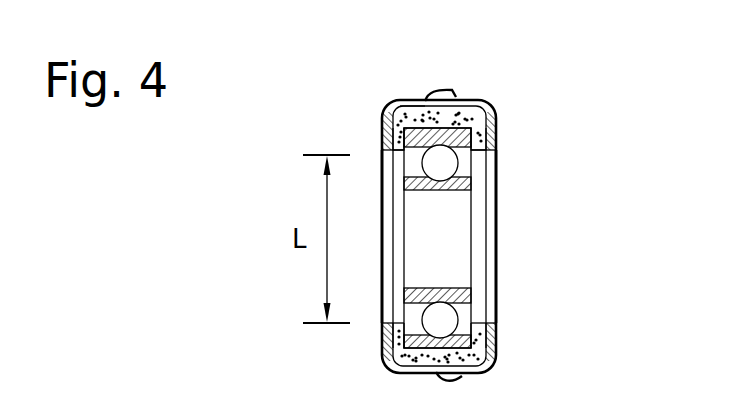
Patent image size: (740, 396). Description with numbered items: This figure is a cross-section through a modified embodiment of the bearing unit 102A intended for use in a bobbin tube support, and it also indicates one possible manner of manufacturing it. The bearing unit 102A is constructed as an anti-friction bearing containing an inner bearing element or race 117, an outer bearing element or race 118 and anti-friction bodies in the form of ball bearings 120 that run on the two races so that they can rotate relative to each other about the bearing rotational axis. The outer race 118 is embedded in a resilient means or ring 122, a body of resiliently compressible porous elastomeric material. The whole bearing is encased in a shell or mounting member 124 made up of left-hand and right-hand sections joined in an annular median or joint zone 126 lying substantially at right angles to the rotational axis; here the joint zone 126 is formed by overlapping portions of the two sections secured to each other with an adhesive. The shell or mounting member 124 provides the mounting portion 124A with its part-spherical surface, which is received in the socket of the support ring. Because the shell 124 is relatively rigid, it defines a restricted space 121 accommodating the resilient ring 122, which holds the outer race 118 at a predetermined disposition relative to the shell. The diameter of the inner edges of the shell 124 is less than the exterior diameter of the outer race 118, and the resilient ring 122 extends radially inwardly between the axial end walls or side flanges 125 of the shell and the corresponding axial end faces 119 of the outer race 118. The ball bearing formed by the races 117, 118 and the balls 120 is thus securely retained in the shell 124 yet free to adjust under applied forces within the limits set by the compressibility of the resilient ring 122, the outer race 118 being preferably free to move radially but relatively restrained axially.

The bearing unit 102A is at (590, 125).
The inner bearing element or race 117 is at (471, 181).
The outer bearing element or race 118 is at (470, 341).
The axial end faces of the outer race 119 is at (492, 133).
The ball bearings 120 is at (445, 322).
The restricted space 121 is at (405, 103).
The resilient means or ring 122 is at (458, 117).
The shell or mounting member 124 is at (391, 108).
The mounting portion 124A is at (462, 97).
The axial end walls or side flanges 125 is at (382, 134).
The annular median or joint zone 126 is at (442, 75).